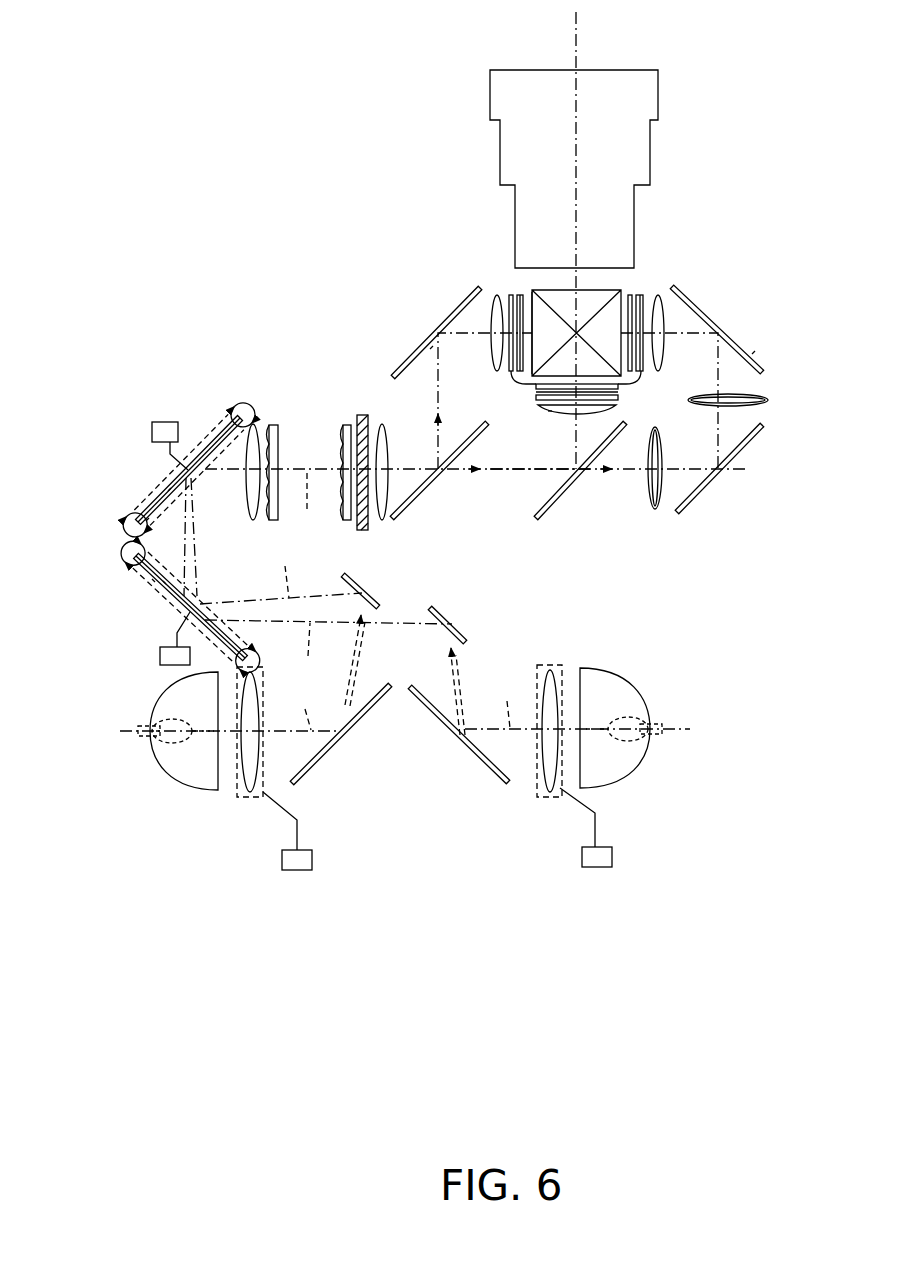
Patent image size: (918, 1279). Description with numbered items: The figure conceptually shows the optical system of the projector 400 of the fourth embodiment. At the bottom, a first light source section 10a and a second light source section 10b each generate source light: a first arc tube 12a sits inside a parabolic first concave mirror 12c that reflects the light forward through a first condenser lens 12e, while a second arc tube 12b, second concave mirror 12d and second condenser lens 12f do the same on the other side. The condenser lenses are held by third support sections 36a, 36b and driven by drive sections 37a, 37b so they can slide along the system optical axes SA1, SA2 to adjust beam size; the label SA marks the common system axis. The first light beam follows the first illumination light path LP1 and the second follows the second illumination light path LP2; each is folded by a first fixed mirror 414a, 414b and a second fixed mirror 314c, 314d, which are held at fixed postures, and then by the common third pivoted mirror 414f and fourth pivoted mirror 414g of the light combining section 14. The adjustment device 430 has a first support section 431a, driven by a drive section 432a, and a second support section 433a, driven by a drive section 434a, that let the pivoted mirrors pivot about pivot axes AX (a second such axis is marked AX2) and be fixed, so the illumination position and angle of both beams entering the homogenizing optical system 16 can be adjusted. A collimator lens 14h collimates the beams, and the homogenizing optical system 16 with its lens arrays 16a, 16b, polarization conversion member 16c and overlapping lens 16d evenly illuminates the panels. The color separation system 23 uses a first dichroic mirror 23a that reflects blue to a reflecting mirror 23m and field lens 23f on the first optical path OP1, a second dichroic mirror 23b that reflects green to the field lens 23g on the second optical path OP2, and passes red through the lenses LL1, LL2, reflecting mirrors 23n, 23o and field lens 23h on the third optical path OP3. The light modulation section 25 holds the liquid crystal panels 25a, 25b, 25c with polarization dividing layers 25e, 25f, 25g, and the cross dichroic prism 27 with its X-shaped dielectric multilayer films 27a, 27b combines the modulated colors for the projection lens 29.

The projector 400 is at (772, 27).
The projection lens 29 is at (534, 141).
The cross dichroic prism 27 is at (602, 277).
The dielectric multilayer film 27a is at (618, 291).
The dielectric multilayer film 27b is at (536, 289).
The light modulation section 25 is at (506, 282).
The liquid crystal panel 25a is at (496, 345).
The liquid crystal panel 25b is at (536, 391).
The liquid crystal panel 25c is at (664, 330).
The polarization dividing layer 25e is at (526, 384).
The polarization dividing layer 25f is at (616, 410).
The polarization dividing layer 25g is at (641, 384).
The color separation system 23 is at (742, 489).
The first dichroic mirror 23a is at (430, 494).
The second dichroic mirror 23b is at (556, 498).
The field lens 23f is at (466, 302).
The field lens 23g is at (546, 412).
The field lens 23h is at (723, 342).
The reflecting mirror 23m is at (426, 345).
The reflecting mirror 23n is at (746, 452).
The reflecting mirror 23o is at (756, 352).
The homogenizing optical system 16 is at (314, 371).
The lens array 16a is at (255, 425).
The lens array 16b is at (345, 425).
The polarization conversion member 16c is at (362, 416).
The overlapping lens 16d is at (382, 521).
The light combining section 14 is at (150, 546).
The collimator lens 14h is at (244, 424).
The adjustment device 430 is at (156, 402).
The first support section 431a is at (151, 580).
The drive section 432a is at (160, 657).
The second support section 433a is at (145, 519).
The drive section 434a is at (152, 431).
The third pivoted mirror 414f is at (163, 581).
The fourth pivoted mirror 414g is at (166, 487).
The first fixed mirror 414a is at (303, 781).
The first fixed mirror 414b is at (496, 781).
The second fixed mirror 314c is at (374, 593).
The second fixed mirror 314d is at (464, 626).
The third support section 36a is at (238, 800).
The third support section 36b is at (560, 667).
The drive section 37a is at (300, 871).
The drive section 37b is at (600, 868).
The first arc tube 12a is at (172, 745).
The second arc tube 12b is at (640, 745).
The first concave mirror 12c is at (188, 786).
The second concave mirror 12d is at (615, 790).
The first condenser lens 12e is at (253, 796).
The second condenser lens 12f is at (555, 796).
The first light source section 10a is at (233, 814).
The second light source section 10b is at (525, 814).
The first lens LL1 is at (655, 509).
The second lens LL2 is at (770, 401).
The first optical path OP1 is at (456, 401).
The second optical path OP2 is at (566, 450).
The third optical path OP3 is at (718, 378).
The pivot axis AX is at (194, 475).
The optical axis AX2 is at (201, 603).
The system axis SA is at (307, 502).
The system optical axis SA1 is at (282, 569).
The system optical axis SA2 is at (403, 676).
The first illumination light path LP1 is at (368, 653).
The second illumination light path LP2 is at (466, 656).